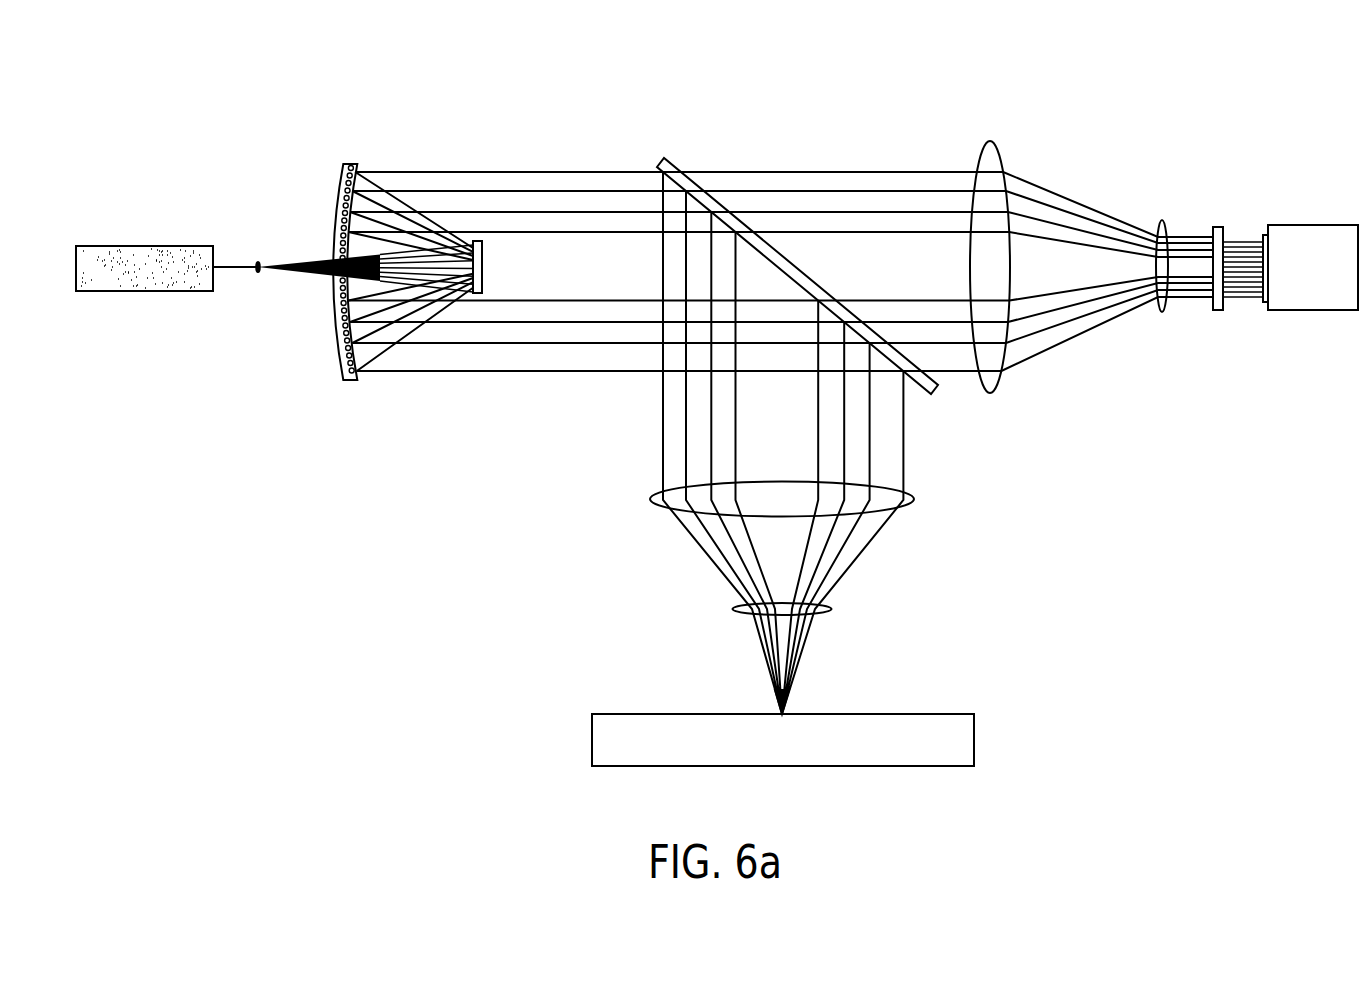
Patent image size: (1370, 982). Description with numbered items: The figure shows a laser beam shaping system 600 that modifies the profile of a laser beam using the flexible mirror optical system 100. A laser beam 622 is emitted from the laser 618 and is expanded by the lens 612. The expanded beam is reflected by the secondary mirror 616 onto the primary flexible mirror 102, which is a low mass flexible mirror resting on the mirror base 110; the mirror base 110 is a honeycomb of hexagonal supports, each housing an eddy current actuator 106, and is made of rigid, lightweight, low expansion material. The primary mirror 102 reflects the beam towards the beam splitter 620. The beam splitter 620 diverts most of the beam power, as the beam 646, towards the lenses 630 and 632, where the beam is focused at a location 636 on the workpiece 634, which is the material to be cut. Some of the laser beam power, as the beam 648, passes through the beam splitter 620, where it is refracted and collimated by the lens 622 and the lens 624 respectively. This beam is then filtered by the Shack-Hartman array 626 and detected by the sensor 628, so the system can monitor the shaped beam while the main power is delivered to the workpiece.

The optical system 100 is at (356, 257).
The flexible mirror 102 is at (362, 358).
The eddy current actuator 106 is at (333, 298).
The mirror base 110 is at (352, 162).
The laser beam shaping system 600 is at (485, 72).
The lens 612 is at (263, 262).
The secondary mirror 616 is at (485, 263).
The laser 618 is at (143, 247).
The beam splitter 620 is at (663, 153).
The laser beam / lens 622 is at (247, 263).
The lens 624 is at (1163, 318).
The Shack-Hartman array 626 is at (1220, 220).
The sensor 628 is at (1313, 222).
The lens 630 is at (917, 500).
The lens 632 is at (733, 608).
The workpiece 634 is at (883, 712).
The location 636 is at (782, 717).
The beam 646 is at (662, 418).
The beam 648 is at (808, 170).